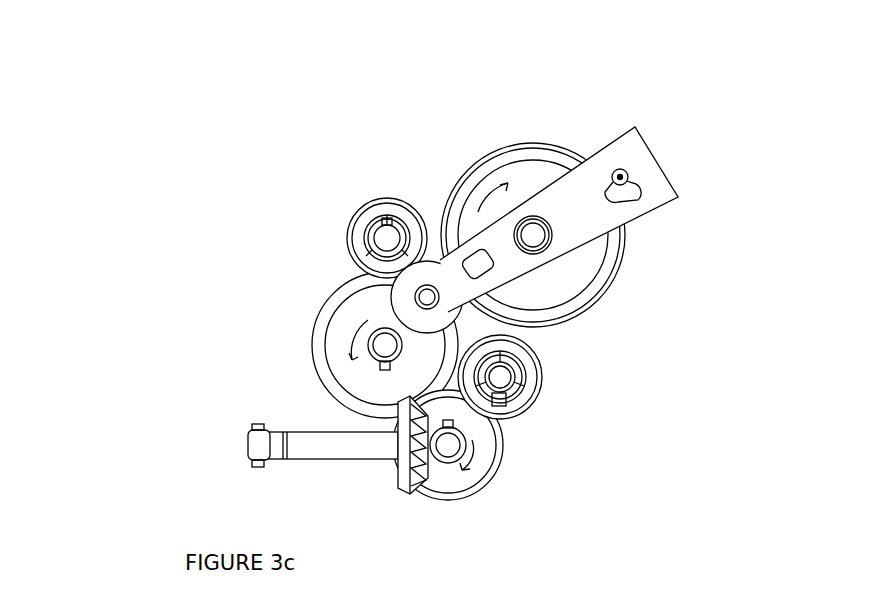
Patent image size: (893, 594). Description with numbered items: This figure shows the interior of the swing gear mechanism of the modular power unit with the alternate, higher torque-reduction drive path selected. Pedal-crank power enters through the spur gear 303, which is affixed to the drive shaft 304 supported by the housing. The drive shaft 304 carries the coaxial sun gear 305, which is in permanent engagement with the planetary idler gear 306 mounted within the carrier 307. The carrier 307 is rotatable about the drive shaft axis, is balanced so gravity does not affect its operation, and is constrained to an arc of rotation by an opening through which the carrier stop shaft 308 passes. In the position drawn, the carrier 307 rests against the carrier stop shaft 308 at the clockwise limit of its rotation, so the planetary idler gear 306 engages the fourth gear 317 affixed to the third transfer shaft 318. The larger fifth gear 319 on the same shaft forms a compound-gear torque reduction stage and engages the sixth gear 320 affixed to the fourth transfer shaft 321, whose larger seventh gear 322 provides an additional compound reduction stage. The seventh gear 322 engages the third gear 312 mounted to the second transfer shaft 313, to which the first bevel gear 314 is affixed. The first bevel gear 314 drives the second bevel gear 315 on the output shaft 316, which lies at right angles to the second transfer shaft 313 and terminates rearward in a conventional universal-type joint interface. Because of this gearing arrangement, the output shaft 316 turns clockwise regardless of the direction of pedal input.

The spur gear 303 is at (439, 125).
The drive shaft 304 is at (447, 138).
The sun gear 305 is at (490, 141).
The planetary idler gear 306 is at (371, 298).
The carrier 307 is at (676, 165).
The carrier stop shaft 308 is at (675, 195).
The third gear 312 is at (512, 478).
The second transfer shaft 313 is at (581, 432).
The first bevel gear 314 is at (602, 475).
The second bevel gear 315 is at (236, 445).
The output shaft 316 is at (257, 445).
The fourth gear 317 is at (348, 194).
The third transfer shaft 318 is at (297, 191).
The fifth gear 319 is at (257, 186).
The sixth gear 320 is at (191, 348).
The fourth transfer shaft 321 is at (243, 348).
The seventh gear 322 is at (300, 360).